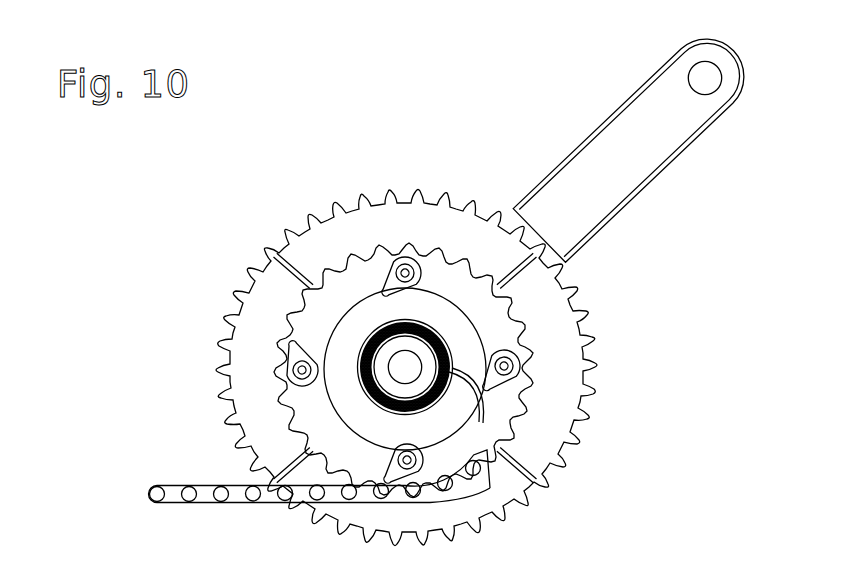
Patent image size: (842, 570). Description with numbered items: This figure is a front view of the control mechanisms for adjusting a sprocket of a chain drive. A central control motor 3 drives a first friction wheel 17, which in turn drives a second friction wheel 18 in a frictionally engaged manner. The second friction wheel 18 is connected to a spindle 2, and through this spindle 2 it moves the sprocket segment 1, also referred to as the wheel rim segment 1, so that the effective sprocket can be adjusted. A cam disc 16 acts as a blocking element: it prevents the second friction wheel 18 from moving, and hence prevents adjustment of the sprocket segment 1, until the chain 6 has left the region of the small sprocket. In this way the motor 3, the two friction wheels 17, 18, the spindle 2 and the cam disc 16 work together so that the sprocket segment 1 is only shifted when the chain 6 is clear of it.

The sprocket segment 1 is at (407, 217).
The spindle 2 is at (357, 432).
The central control motor 3 is at (390, 323).
The chain 6 is at (395, 471).
The cam disc 16 is at (396, 456).
The first friction wheel 17 is at (355, 330).
The second friction wheel 18 is at (292, 362).